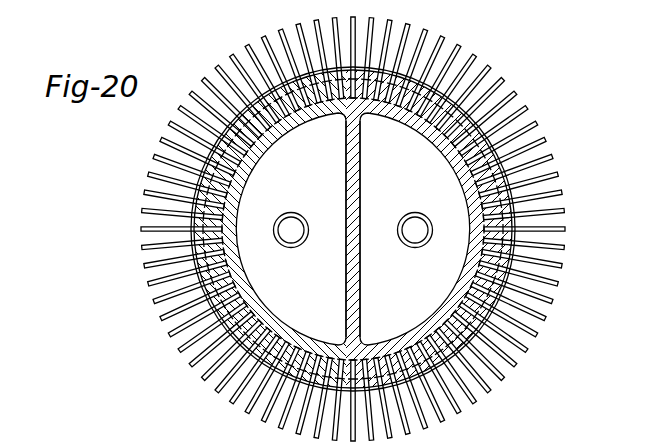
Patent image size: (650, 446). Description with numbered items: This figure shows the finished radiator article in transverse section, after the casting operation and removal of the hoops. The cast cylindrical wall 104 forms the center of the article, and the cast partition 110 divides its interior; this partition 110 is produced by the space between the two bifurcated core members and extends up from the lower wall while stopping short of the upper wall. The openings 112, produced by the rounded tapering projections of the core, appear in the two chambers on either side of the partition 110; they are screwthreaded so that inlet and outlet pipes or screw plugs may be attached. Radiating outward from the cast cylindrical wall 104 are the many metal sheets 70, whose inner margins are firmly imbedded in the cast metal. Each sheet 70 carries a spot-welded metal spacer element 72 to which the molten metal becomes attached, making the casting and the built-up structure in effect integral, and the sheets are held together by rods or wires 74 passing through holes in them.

The metal sheet 70 is at (148, 246).
The metal spacer element 72 is at (199, 341).
The rods or wires 74 is at (186, 276).
The cast cylindrical wall 104 is at (268, 326).
The cast partition 110 is at (368, 302).
The openings 112 is at (299, 215).